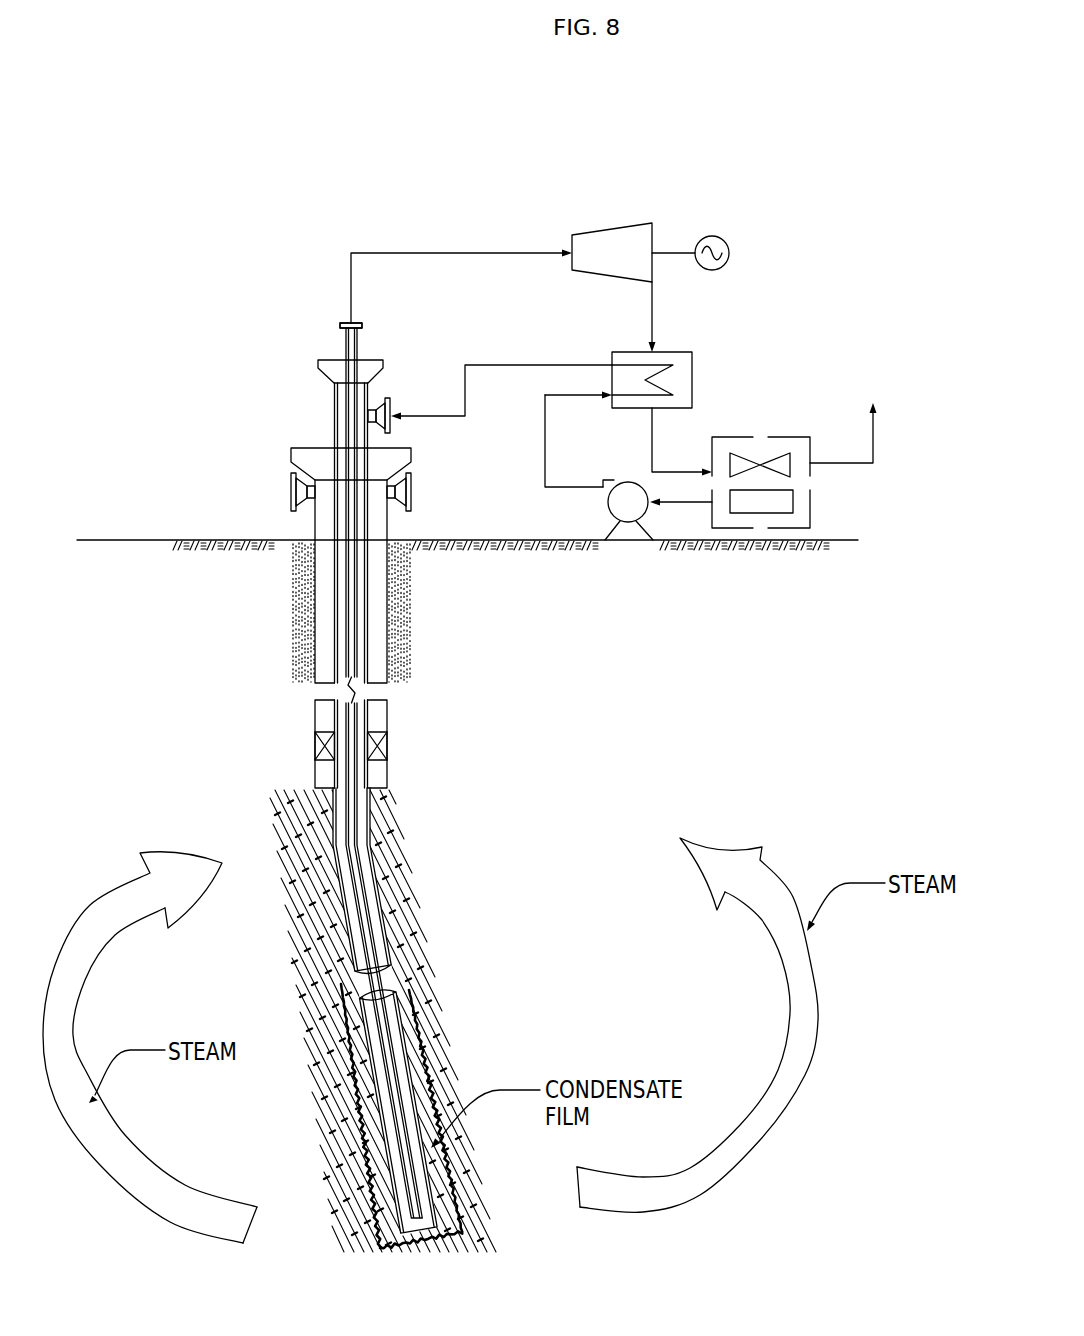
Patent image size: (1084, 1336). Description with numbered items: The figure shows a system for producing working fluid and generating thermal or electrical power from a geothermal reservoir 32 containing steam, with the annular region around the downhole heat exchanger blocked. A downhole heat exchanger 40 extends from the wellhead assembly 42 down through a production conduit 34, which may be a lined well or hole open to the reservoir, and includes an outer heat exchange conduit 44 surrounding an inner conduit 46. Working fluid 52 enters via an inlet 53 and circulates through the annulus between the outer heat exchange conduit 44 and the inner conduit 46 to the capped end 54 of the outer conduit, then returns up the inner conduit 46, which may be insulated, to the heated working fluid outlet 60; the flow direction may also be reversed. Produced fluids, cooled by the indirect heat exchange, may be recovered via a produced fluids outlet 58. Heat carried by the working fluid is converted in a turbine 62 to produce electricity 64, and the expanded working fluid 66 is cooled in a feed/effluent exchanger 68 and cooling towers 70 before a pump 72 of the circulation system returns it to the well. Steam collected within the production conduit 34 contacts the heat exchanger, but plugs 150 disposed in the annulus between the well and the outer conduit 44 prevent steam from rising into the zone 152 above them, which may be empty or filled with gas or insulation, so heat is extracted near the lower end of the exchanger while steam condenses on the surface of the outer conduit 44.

The geothermal reservoir 32 is at (437, 882).
The production conduit 34 is at (308, 762).
The downhole heat exchanger 40 is at (333, 352).
The wellhead assembly 42 is at (289, 442).
The outer heat exchange conduit 44 is at (330, 850).
The inner conduit 46 is at (338, 808).
The working fluid 52 is at (501, 392).
The inlet 53 is at (389, 385).
The capped end 54 is at (456, 722).
The produced fluids outlet 58 is at (288, 515).
The heated working fluid outlet 60 is at (363, 312).
The turbine 62 is at (612, 252).
The electricity 64 is at (719, 225).
The expanded working fluid 66 is at (662, 310).
The feed/effluent exchanger 68 is at (698, 368).
The cooling towers 70 is at (755, 430).
The pump 72 is at (598, 503).
The plugs 150 is at (390, 736).
The zone 152 is at (380, 612).